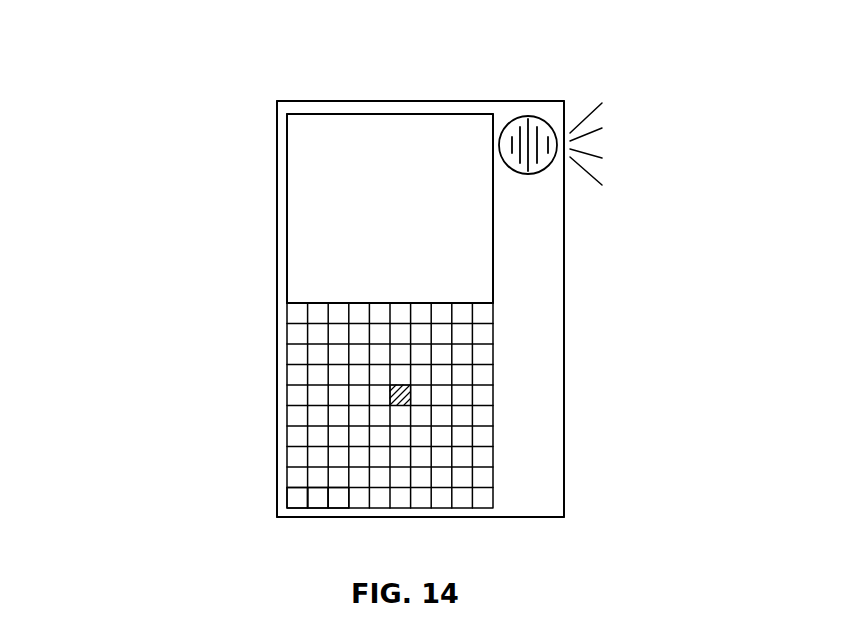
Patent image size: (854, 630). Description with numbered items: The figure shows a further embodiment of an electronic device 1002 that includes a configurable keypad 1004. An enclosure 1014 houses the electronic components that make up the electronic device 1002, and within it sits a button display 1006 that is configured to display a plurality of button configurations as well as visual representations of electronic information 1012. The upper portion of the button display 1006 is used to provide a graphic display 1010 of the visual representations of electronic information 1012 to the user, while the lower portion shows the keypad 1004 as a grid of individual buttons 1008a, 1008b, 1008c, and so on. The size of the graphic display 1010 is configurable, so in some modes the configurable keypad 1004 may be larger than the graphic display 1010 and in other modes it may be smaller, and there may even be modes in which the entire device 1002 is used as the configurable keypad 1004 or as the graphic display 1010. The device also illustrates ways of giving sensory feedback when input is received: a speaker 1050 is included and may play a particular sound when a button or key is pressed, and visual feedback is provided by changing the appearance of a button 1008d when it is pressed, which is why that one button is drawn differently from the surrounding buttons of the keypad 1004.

The electronic device 1002 is at (200, 100).
The configurable keypad 1004 is at (287, 418).
The button display 1006 is at (632, 102).
The individual button 1008a is at (292, 503).
The individual button 1008b is at (318, 503).
The individual button 1008c is at (343, 503).
The button 1008d is at (390, 397).
The graphic display 1010 is at (265, 115).
The visual representations of electronic information 1012 is at (312, 122).
The enclosure 1014 is at (472, 100).
The speaker 1050 is at (530, 117).